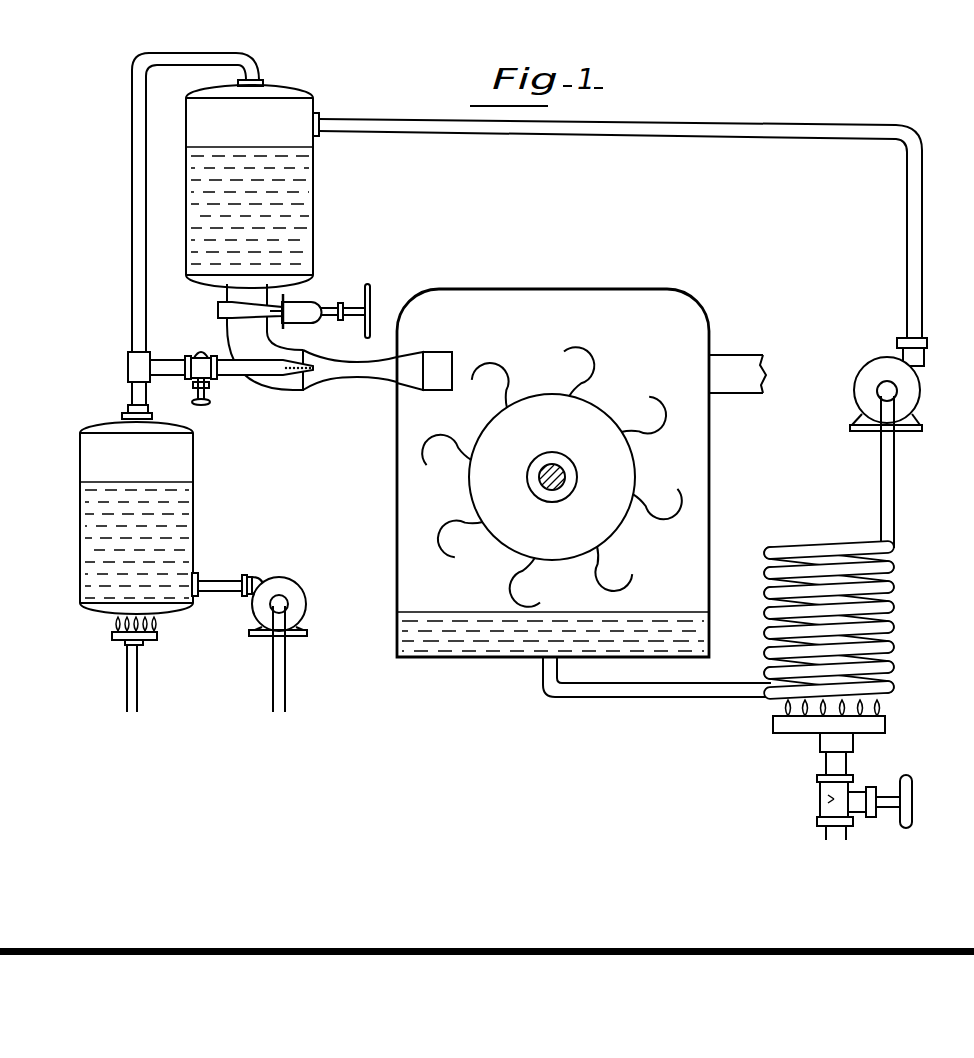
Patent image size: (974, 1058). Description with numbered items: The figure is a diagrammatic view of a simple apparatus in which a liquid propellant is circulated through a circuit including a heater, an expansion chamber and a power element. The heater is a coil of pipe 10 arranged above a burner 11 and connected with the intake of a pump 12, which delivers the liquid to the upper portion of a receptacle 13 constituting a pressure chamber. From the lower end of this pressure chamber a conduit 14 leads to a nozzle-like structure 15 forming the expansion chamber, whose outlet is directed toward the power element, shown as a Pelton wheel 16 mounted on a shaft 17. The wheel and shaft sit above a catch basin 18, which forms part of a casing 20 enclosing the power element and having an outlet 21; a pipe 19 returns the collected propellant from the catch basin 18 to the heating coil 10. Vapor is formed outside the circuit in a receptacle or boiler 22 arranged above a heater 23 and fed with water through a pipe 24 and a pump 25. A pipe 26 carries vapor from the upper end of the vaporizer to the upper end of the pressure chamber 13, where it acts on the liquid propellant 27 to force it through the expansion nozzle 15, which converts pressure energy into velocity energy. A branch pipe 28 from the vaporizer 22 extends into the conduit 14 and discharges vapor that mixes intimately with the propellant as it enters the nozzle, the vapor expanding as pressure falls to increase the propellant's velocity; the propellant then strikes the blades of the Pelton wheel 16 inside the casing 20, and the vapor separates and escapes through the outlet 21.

The coil of pipe 10 is at (895, 568).
The burner 11 is at (870, 730).
The pump 12 is at (863, 385).
The receptacle 13 is at (313, 210).
The conduit 14 is at (227, 323).
The nozzle-like structure 15 is at (381, 378).
The Pelton wheel 16 is at (590, 403).
The shaft 17 is at (568, 476).
The catch basin 18 is at (443, 638).
The pipe 19 is at (660, 690).
The casing 20 is at (613, 290).
The outlet 21 is at (748, 384).
The receptacle or boiler 22 is at (183, 515).
The heater 23 is at (148, 640).
The pipe 24 is at (236, 592).
The pump 25 is at (296, 607).
The pipe 26 is at (138, 265).
The liquid propellant 27 is at (238, 148).
The branch pipe 28 is at (228, 376).